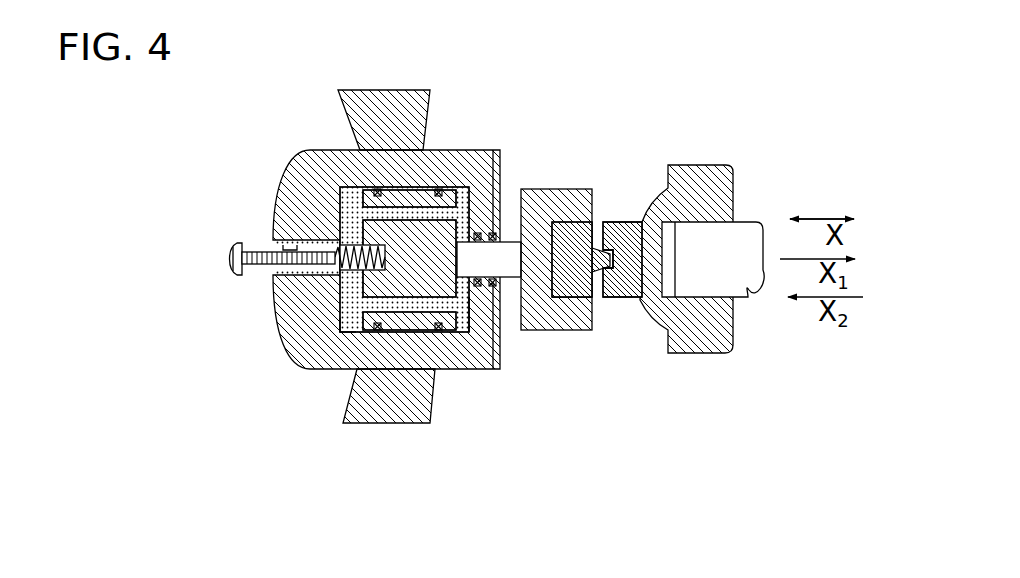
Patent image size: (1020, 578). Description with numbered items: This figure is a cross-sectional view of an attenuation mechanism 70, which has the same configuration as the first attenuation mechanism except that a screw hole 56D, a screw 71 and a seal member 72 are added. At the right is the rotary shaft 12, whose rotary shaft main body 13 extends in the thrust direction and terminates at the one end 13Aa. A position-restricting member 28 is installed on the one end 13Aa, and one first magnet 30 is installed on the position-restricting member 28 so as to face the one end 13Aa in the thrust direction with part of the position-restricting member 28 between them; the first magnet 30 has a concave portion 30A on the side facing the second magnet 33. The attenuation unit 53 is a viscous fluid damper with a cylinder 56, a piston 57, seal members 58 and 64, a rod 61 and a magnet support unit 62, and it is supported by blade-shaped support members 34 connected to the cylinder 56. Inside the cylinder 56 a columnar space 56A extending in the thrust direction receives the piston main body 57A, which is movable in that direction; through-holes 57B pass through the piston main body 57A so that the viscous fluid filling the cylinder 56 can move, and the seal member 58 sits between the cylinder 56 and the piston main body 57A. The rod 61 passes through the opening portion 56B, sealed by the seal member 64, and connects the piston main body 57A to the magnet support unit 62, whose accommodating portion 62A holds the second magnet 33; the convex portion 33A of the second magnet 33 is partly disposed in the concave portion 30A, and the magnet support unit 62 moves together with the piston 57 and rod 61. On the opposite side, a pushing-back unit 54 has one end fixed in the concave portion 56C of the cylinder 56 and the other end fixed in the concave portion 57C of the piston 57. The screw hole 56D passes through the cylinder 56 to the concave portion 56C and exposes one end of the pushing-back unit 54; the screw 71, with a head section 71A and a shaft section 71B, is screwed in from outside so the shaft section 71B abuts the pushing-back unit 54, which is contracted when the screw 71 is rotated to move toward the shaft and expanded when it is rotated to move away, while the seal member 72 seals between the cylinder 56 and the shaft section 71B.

The attenuation unit 53 is at (291, 355).
The support members 34 is at (386, 108).
The cylinder 56 is at (459, 348).
The space 56A is at (343, 329).
The opening portion 56B is at (471, 330).
The concave portion 56C is at (300, 239).
The screw hole 56D is at (275, 266).
The piston 57 is at (411, 257).
The piston main body 57A is at (433, 184).
The through-holes 57B is at (407, 303).
The concave portion 57C is at (362, 245).
The seal member 58 is at (440, 331).
The pushing-back unit 54 is at (343, 263).
The rod 61 is at (487, 257).
The seal member 64 is at (483, 287).
The attenuation mechanism 70 is at (219, 237).
The screw 71 is at (219, 261).
The head section 71A is at (230, 247).
The shaft section 71B is at (265, 264).
The seal member 72 is at (290, 244).
The magnet support unit 62 is at (573, 244).
The accommodating portion 62A is at (588, 237).
The second magnet 33 is at (567, 314).
The convex portion 33A is at (601, 270).
The first magnet 30 is at (636, 273).
The concave portion 30A is at (617, 264).
The position-restricting member 28 is at (654, 187).
The rotary shaft main body 13 is at (761, 271).
The rotary shaft 12 is at (761, 271).
The one end 13Aa is at (697, 232).